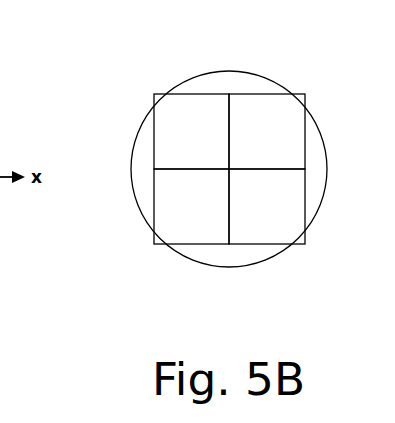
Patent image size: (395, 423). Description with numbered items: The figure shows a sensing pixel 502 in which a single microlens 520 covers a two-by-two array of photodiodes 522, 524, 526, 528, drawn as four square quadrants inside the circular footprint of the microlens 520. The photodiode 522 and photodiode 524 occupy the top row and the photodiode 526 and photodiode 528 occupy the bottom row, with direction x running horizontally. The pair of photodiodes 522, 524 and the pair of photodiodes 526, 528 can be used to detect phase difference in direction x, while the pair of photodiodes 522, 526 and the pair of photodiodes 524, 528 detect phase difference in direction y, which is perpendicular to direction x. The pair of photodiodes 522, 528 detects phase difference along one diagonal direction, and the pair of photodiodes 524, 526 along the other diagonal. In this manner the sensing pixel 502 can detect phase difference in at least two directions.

The sensing pixel 502 is at (165, 148).
The microlens 520 is at (268, 78).
The photodiode 522 is at (173, 142).
The photodiode 524 is at (243, 142).
The photodiode 526 is at (171, 220).
The photodiode 528 is at (243, 220).